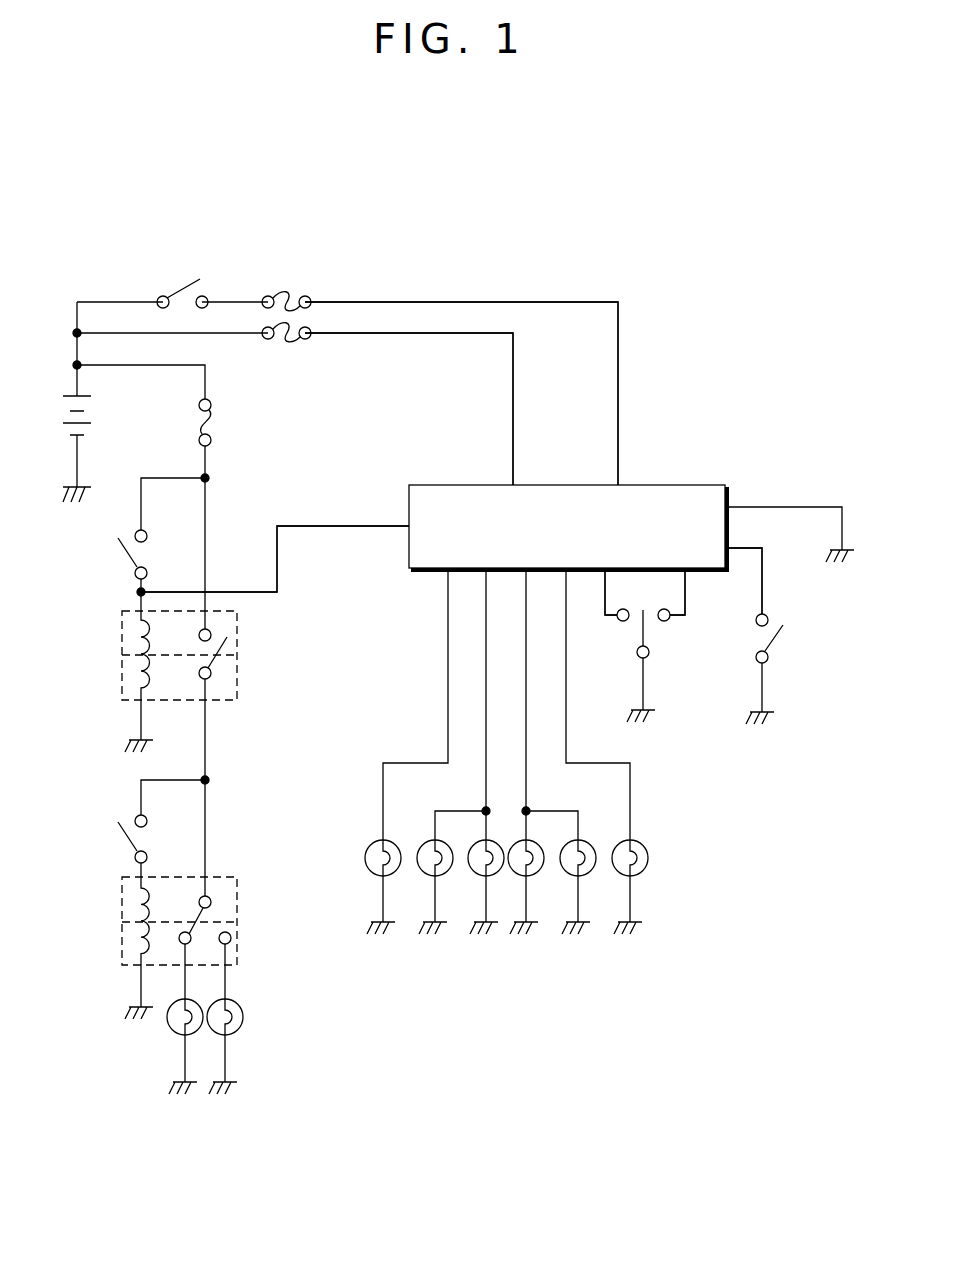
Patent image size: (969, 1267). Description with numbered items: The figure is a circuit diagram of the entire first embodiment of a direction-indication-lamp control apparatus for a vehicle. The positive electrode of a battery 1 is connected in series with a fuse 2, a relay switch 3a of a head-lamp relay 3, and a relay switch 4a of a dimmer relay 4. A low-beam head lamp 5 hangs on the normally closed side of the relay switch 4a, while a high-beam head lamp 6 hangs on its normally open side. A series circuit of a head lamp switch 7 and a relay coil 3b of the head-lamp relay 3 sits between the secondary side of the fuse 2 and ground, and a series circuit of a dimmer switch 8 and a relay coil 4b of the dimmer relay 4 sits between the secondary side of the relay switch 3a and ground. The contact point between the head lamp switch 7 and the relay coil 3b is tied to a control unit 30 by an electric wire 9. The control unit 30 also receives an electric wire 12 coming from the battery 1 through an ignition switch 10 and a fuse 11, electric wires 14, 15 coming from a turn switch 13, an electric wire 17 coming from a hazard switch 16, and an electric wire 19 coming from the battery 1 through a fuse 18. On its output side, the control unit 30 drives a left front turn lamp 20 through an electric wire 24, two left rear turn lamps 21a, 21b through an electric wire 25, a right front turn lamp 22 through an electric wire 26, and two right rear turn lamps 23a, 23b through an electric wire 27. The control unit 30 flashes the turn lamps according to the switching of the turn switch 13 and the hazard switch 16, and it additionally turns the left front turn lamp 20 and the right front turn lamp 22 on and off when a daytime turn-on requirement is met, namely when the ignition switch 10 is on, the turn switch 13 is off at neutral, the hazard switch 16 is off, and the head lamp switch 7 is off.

The battery 1 is at (54, 419).
The fuse 2 is at (213, 426).
The head-lamp relay 3 is at (181, 681).
The relay switch 3a is at (212, 670).
The relay coil 3b is at (122, 665).
The dimmer relay 4 is at (182, 948).
The relay switch 4a is at (222, 925).
The relay coil 4b is at (122, 924).
The low-beam head lamp 5 is at (168, 1025).
The high-beam head lamp 6 is at (244, 1017).
The head lamp switch 7 is at (122, 556).
The dimmer switch 8 is at (118, 842).
The electric wire 9 is at (373, 528).
The ignition switch 10 is at (208, 283).
The fuse 11 is at (290, 283).
The electric wire 12 is at (531, 300).
The turn switch 13 is at (655, 640).
The electric wire 14 is at (600, 598).
The electric wire 15 is at (688, 597).
The hazard switch 16 is at (785, 638).
The electric wire 17 is at (766, 590).
The fuse 18 is at (285, 340).
The electric wire 19 is at (470, 340).
The left front turn lamp 20 is at (366, 852).
The left rear turn lamp 21a is at (424, 873).
The left rear turn lamp 21b is at (480, 876).
The right front turn lamp 22 is at (650, 853).
The right rear turn lamp 23a is at (590, 876).
The right rear turn lamp 23b is at (535, 876).
The electric wire 24 is at (445, 702).
The electric wire 25 is at (484, 788).
The electric wire 26 is at (568, 690).
The electric wire 27 is at (531, 786).
The control unit 30 is at (702, 484).